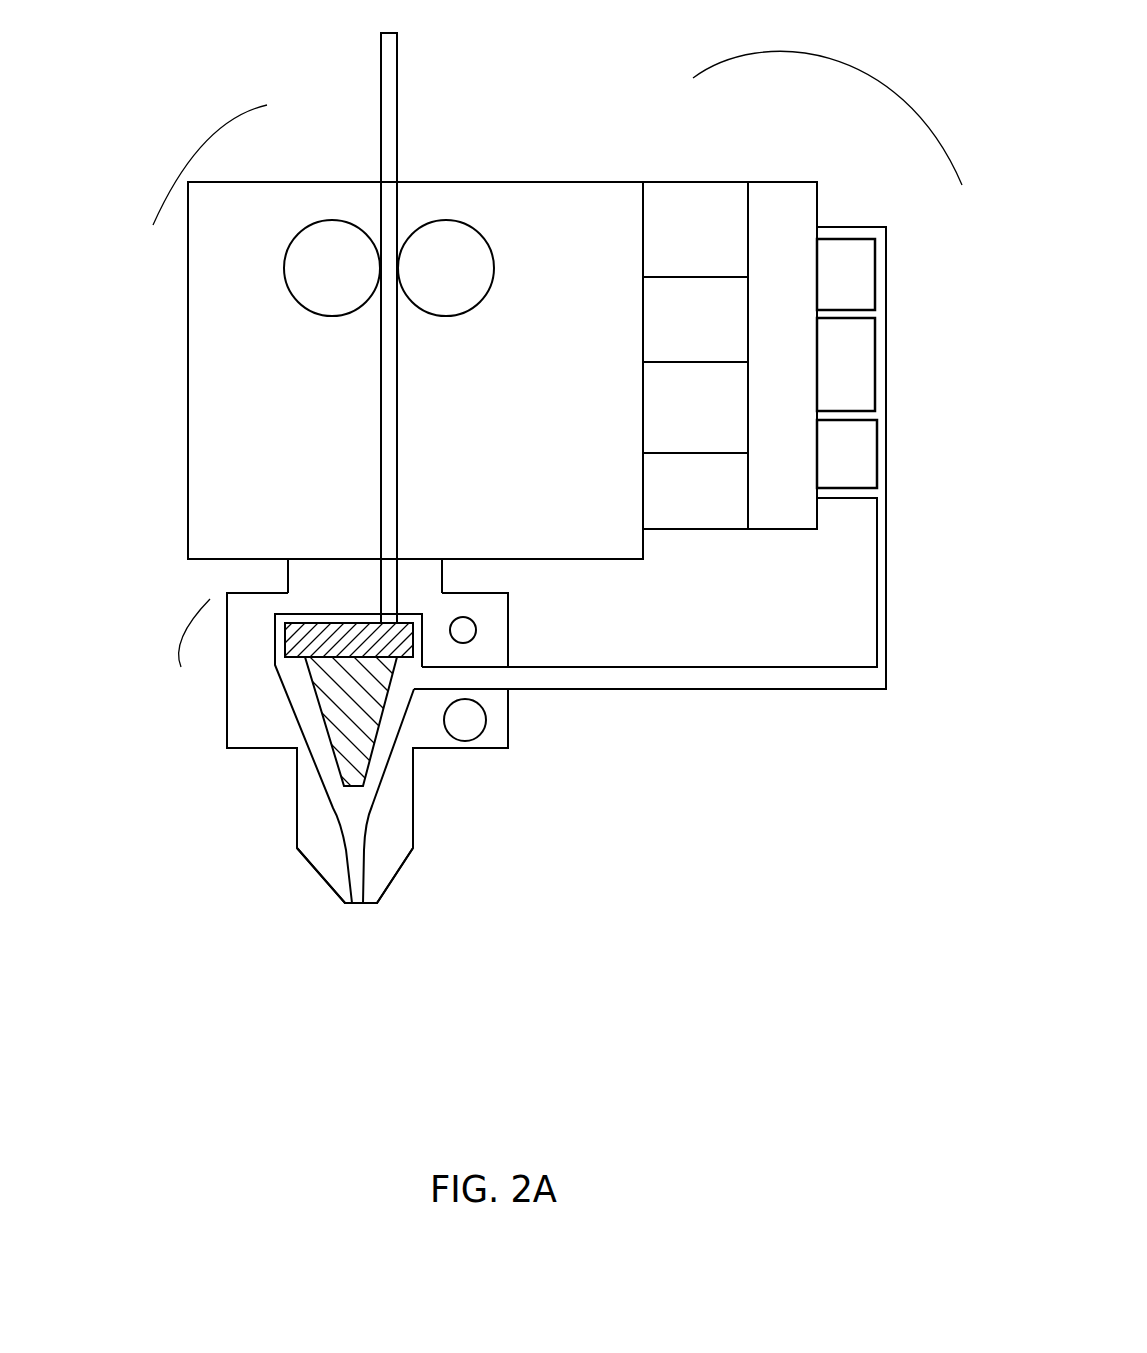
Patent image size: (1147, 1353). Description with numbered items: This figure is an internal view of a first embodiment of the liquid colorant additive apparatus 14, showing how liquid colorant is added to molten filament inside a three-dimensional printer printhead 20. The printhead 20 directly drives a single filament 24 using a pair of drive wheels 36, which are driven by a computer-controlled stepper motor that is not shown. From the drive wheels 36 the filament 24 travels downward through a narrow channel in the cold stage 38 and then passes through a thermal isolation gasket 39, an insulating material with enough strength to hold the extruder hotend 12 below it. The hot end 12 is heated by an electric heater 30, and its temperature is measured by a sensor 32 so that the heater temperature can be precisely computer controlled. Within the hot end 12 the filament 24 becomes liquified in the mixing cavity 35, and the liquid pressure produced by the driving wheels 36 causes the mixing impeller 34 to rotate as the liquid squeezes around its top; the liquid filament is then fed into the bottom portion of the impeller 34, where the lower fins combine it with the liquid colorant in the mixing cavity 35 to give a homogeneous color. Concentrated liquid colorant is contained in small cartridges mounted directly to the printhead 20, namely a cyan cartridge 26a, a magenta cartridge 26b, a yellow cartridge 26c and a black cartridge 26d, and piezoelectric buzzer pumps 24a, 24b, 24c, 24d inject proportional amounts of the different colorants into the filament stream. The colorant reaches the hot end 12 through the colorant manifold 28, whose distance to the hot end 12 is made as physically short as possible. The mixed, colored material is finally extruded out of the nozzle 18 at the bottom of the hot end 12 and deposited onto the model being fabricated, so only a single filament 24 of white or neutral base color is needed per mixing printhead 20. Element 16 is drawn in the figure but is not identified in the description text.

The extruder hotend 12 is at (508, 748).
The liquid colorant additive apparatus 14 is at (863, 62).
The heater block 16 is at (181, 637).
The nozzle 18 is at (333, 893).
The printhead 20 is at (183, 167).
The filament 24 is at (398, 118).
The piezoelectric buzzer pump 24a is at (768, 205).
The piezoelectric buzzer pump 24b is at (782, 318).
The piezoelectric buzzer pump 24c is at (782, 423).
The piezoelectric buzzer pump 24d is at (782, 505).
The cyan colorant cartridge 26a is at (688, 222).
The magenta colorant cartridge 26b is at (683, 327).
The yellow colorant cartridge 26c is at (683, 416).
The black colorant cartridge 26d is at (686, 507).
The colorant manifold 28 is at (852, 690).
The electric heater 30 is at (465, 720).
The sensor 32 is at (463, 630).
The mixing impeller 34 is at (313, 693).
The mixing cavity 35 is at (353, 802).
The drive wheels 36 is at (283, 268).
The cold stage 38 is at (219, 496).
The thermal isolation gasket 39 is at (287, 577).